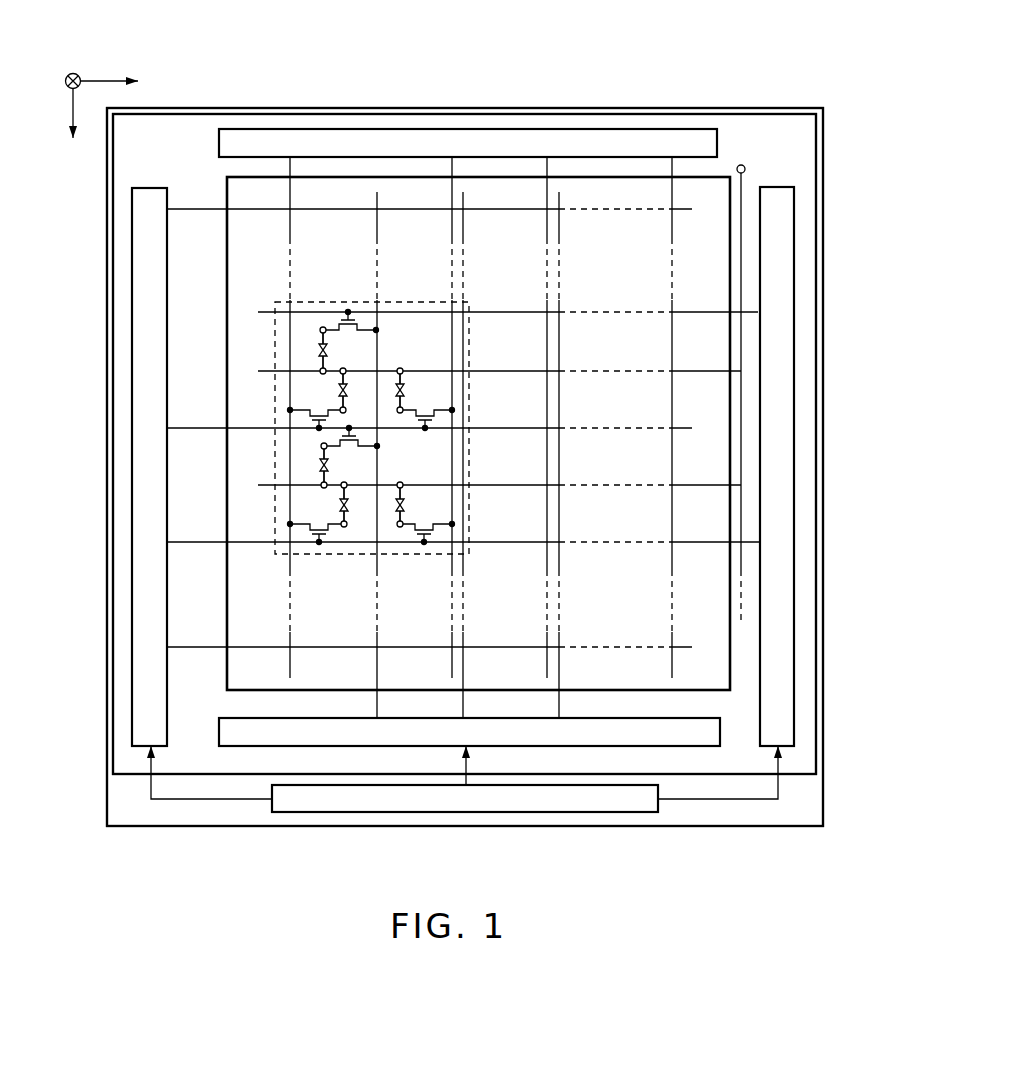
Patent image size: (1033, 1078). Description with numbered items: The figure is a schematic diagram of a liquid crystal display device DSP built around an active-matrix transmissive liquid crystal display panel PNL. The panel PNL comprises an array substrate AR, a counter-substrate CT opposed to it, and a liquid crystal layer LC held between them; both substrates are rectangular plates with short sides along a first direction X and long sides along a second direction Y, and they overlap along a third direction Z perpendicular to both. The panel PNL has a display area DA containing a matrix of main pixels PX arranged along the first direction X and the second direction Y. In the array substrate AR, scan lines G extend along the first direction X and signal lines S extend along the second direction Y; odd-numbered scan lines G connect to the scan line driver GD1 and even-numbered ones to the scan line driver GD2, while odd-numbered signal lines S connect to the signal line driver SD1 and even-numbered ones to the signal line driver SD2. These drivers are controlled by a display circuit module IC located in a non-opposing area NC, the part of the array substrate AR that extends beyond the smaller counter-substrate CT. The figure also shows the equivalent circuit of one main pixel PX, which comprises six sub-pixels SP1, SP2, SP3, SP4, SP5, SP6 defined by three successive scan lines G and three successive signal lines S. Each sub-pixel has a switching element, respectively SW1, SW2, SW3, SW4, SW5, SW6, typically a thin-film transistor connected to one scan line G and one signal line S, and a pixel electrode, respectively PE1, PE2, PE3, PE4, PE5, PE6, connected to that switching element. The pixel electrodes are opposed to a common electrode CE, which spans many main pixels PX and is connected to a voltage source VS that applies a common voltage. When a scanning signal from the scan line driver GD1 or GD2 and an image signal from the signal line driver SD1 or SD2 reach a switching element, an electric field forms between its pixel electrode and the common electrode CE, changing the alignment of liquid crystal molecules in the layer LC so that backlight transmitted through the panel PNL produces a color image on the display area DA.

The liquid crystal display device DSP is at (214, 84).
The liquid crystal display panel PNL is at (62, 310).
The array substrate AR is at (109, 371).
The counter-substrate CT is at (122, 324).
The liquid crystal layer LC is at (320, 350).
The display area DA is at (728, 176).
The main pixel PX is at (427, 301).
The sub-pixel SP1 is at (320, 313).
The sub-pixel SP2 is at (308, 389).
The sub-pixel SP3 is at (433, 384).
The sub-pixel SP4 is at (310, 469).
The sub-pixel SP5 is at (298, 510).
The sub-pixel SP6 is at (436, 497).
The switching element SW1 is at (341, 323).
The switching element SW2 is at (312, 418).
The switching element SW3 is at (433, 414).
The switching element SW4 is at (342, 437).
The switching element SW5 is at (316, 537).
The switching element SW6 is at (431, 537).
The pixel electrode PE1 is at (320, 329).
The pixel electrode PE2 is at (346, 407).
The pixel electrode PE3 is at (400, 414).
The pixel electrode PE4 is at (321, 449).
The pixel electrode PE5 is at (345, 528).
The pixel electrode PE6 is at (400, 528).
The common electrode CE is at (326, 368).
The scan line G is at (202, 209).
The signal line S is at (547, 193).
The scan line driver GD1 is at (148, 188).
The scan line driver GD2 is at (777, 186).
The signal line driver SD1 is at (398, 140).
The signal line driver SD2 is at (698, 733).
The voltage source VS is at (741, 165).
The display circuit module IC is at (625, 805).
The non-opposing area NC is at (712, 807).
The first direction X is at (119, 80).
The second direction Y is at (73, 127).
The third direction Z is at (74, 67).